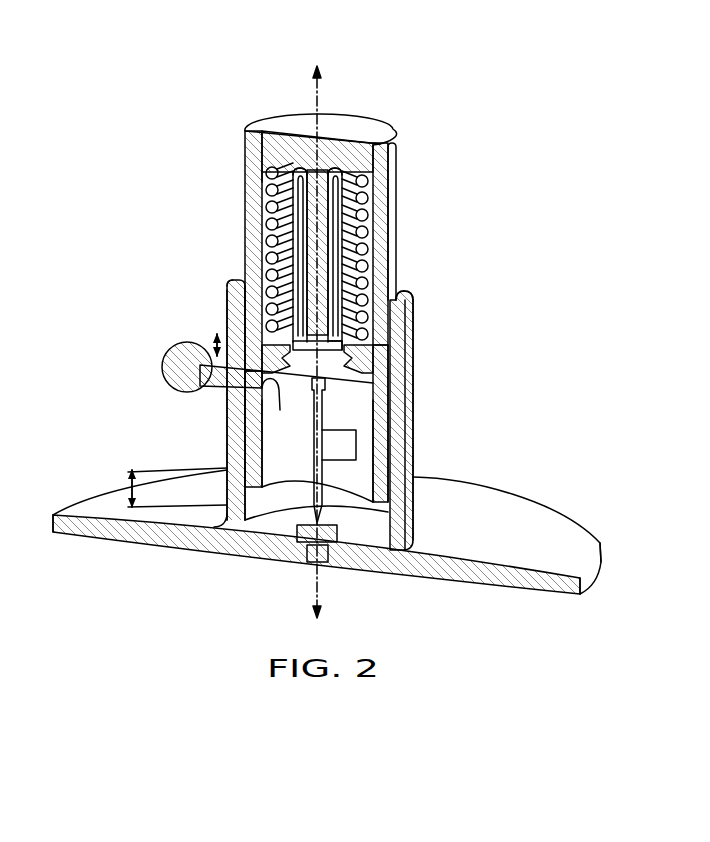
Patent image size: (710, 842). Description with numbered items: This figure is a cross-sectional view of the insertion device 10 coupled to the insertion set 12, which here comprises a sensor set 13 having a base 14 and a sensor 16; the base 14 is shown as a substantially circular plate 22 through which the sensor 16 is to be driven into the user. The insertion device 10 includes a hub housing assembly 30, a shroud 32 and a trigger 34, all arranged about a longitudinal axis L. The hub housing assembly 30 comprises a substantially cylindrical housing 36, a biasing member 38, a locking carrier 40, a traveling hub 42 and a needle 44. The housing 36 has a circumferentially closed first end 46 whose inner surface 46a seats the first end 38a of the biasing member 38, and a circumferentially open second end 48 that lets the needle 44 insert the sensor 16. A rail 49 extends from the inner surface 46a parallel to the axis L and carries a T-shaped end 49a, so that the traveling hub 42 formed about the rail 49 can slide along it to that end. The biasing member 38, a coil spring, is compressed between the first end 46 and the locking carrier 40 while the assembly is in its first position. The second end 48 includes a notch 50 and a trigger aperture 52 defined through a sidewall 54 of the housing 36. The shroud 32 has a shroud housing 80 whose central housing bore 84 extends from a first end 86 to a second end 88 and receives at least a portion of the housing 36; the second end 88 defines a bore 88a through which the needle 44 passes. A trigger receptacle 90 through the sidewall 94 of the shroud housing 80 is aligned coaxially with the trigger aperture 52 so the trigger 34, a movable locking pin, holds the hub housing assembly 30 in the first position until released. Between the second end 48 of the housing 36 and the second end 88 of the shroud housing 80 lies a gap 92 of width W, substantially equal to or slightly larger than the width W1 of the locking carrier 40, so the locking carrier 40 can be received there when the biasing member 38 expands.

The insertion device 10 is at (505, 133).
The insertion set 12 is at (558, 432).
The sensor set 13 is at (562, 488).
The base 14 is at (616, 589).
The sensor 16 is at (368, 462).
The base plate 22 is at (590, 539).
The hub housing assembly 30 is at (470, 238).
The shroud 32 is at (462, 380).
The trigger 34 is at (178, 362).
The housing 36 is at (228, 188).
The biasing member 38 is at (262, 265).
The first end of the biasing member 38a is at (364, 177).
The locking carrier 40 is at (377, 368).
The traveling hub 42 is at (345, 210).
The needle 44 is at (324, 385).
The first end 46 is at (283, 105).
The inner surface 46a is at (262, 172).
The second end 48 is at (408, 492).
The rail 49 is at (303, 242).
The T-shaped end 49a is at (367, 335).
The notch 50 is at (380, 430).
The trigger aperture 52 is at (280, 398).
The sidewall 54 is at (245, 466).
The shroud housing 80 is at (490, 347).
The central housing bore 84 is at (394, 290).
The first end 86 is at (413, 297).
The second end 88 is at (424, 543).
The bore 88a is at (300, 548).
The trigger receptacle 90 is at (210, 396).
The gap 92 is at (245, 490).
The sidewall 94 is at (230, 300).
The longitudinal axis L is at (322, 96).
The width of the gap W is at (132, 490).
The width of the locking carrier W1 is at (217, 334).